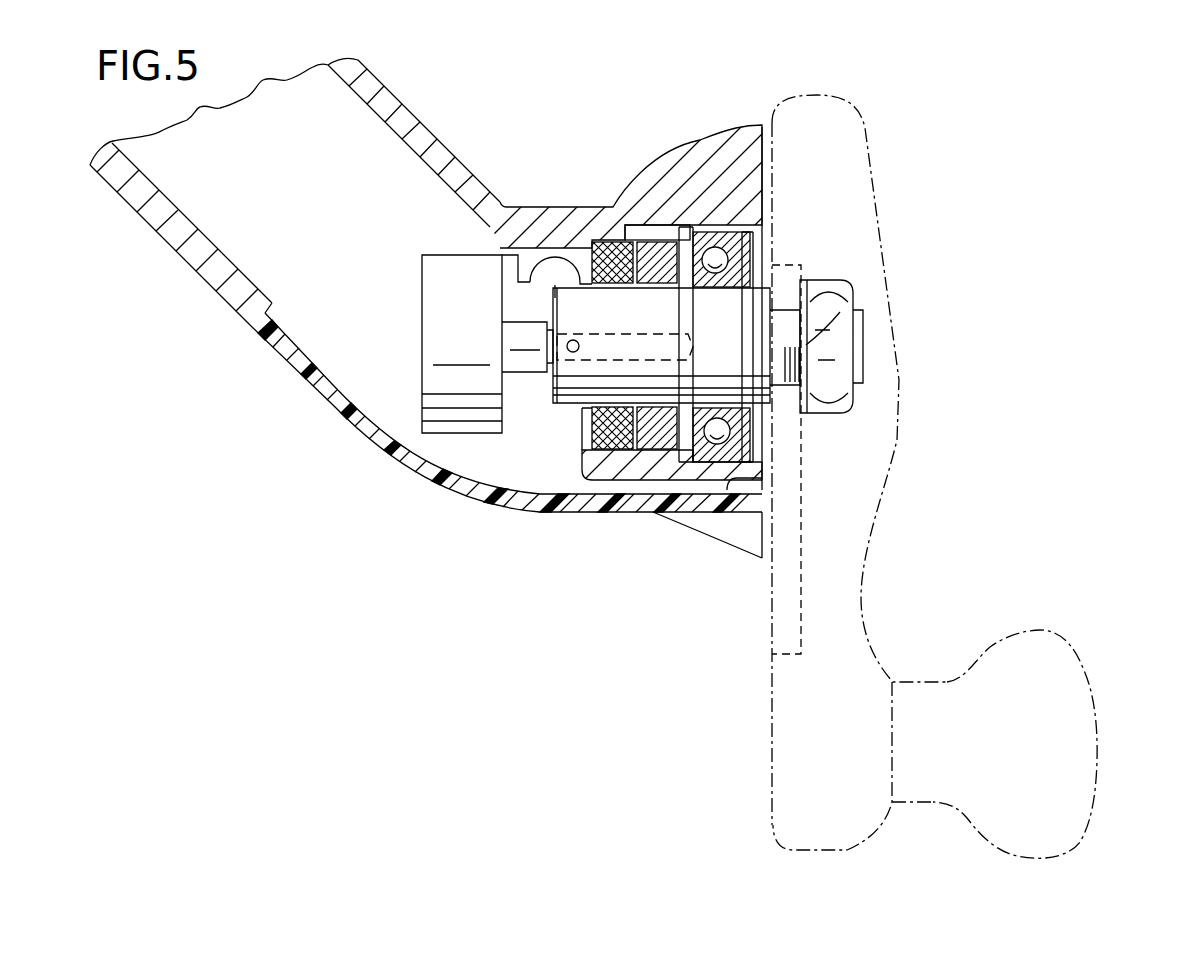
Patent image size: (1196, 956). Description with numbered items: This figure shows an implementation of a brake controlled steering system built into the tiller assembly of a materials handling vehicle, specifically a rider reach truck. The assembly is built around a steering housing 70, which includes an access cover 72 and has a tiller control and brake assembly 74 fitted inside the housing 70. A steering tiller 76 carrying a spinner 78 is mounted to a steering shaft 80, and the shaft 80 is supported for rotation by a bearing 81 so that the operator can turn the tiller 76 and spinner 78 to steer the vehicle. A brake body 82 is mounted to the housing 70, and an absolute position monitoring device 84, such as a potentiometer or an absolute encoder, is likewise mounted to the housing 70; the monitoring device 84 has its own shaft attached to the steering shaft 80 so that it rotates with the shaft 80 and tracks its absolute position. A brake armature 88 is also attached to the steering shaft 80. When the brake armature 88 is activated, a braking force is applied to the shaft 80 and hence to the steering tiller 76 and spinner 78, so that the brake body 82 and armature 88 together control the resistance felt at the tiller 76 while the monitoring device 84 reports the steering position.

The steering housing 70 is at (437, 135).
The access cover 72 is at (713, 543).
The tiller control and brake assembly 74 is at (370, 257).
The steering tiller 76 is at (887, 521).
The spinner 78 is at (1085, 672).
The steering shaft 80 is at (730, 313).
The bearing 81 is at (701, 233).
The brake body 82 is at (660, 447).
The absolute position monitoring device 84 is at (460, 437).
The brake armature 88 is at (605, 450).